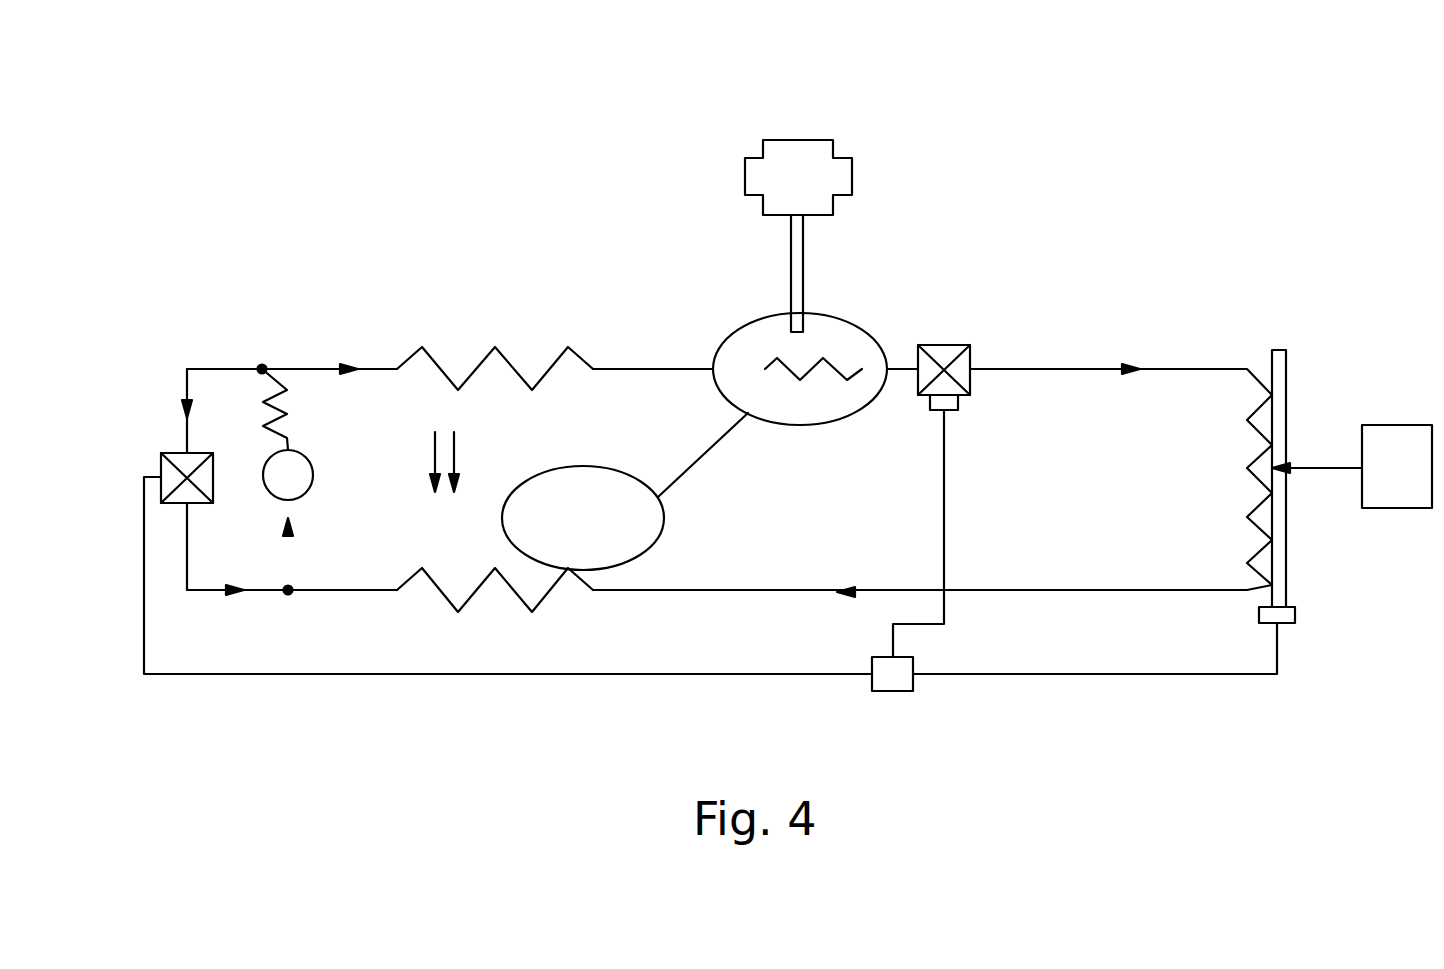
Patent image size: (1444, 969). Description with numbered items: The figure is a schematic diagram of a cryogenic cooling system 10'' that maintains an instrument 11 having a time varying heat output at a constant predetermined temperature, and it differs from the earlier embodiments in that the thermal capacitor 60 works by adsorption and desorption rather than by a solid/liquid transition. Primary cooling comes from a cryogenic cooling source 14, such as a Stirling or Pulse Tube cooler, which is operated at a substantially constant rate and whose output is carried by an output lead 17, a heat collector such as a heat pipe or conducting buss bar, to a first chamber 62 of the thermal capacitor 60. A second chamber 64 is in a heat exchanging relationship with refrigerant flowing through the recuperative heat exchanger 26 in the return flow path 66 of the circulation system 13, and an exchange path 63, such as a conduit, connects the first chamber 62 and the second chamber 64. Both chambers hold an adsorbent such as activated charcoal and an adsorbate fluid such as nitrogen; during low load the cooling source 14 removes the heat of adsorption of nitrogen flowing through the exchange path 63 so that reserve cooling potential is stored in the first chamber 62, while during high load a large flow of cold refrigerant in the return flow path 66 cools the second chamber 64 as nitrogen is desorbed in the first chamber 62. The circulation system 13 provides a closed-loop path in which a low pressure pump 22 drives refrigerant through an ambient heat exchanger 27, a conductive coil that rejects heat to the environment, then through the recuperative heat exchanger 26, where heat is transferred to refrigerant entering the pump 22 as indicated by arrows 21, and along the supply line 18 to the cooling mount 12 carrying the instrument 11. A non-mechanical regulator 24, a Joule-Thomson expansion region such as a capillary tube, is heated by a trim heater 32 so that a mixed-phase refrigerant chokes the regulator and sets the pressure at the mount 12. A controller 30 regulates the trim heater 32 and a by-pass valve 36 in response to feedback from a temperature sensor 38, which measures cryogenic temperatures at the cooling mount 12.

The cryogenic cooling system 10'' is at (1004, 163).
The instrument 11 is at (1378, 425).
The cooling mount 12 is at (1286, 368).
The circulation system 13 is at (1205, 335).
The cryogenic cooling source 14 is at (856, 172).
The output lead 17 is at (805, 258).
The supply line 18 is at (1058, 369).
The arrows 21 is at (456, 452).
The low pressure pump 22 is at (313, 475).
The non-mechanical regulator 24 is at (948, 345).
The recuperative heat exchanger 26 is at (433, 358).
The ambient heat exchanger 27 is at (280, 395).
The controller 30 is at (893, 691).
The trim heater 32 is at (953, 410).
The by-pass valve 36 is at (175, 453).
The temperature sensor 38 is at (1295, 617).
The thermal capacitor 60 is at (688, 500).
The first chamber 62 is at (853, 321).
The exchange path 63 is at (720, 440).
The second chamber 64 is at (590, 467).
The return flow path 66 is at (640, 590).